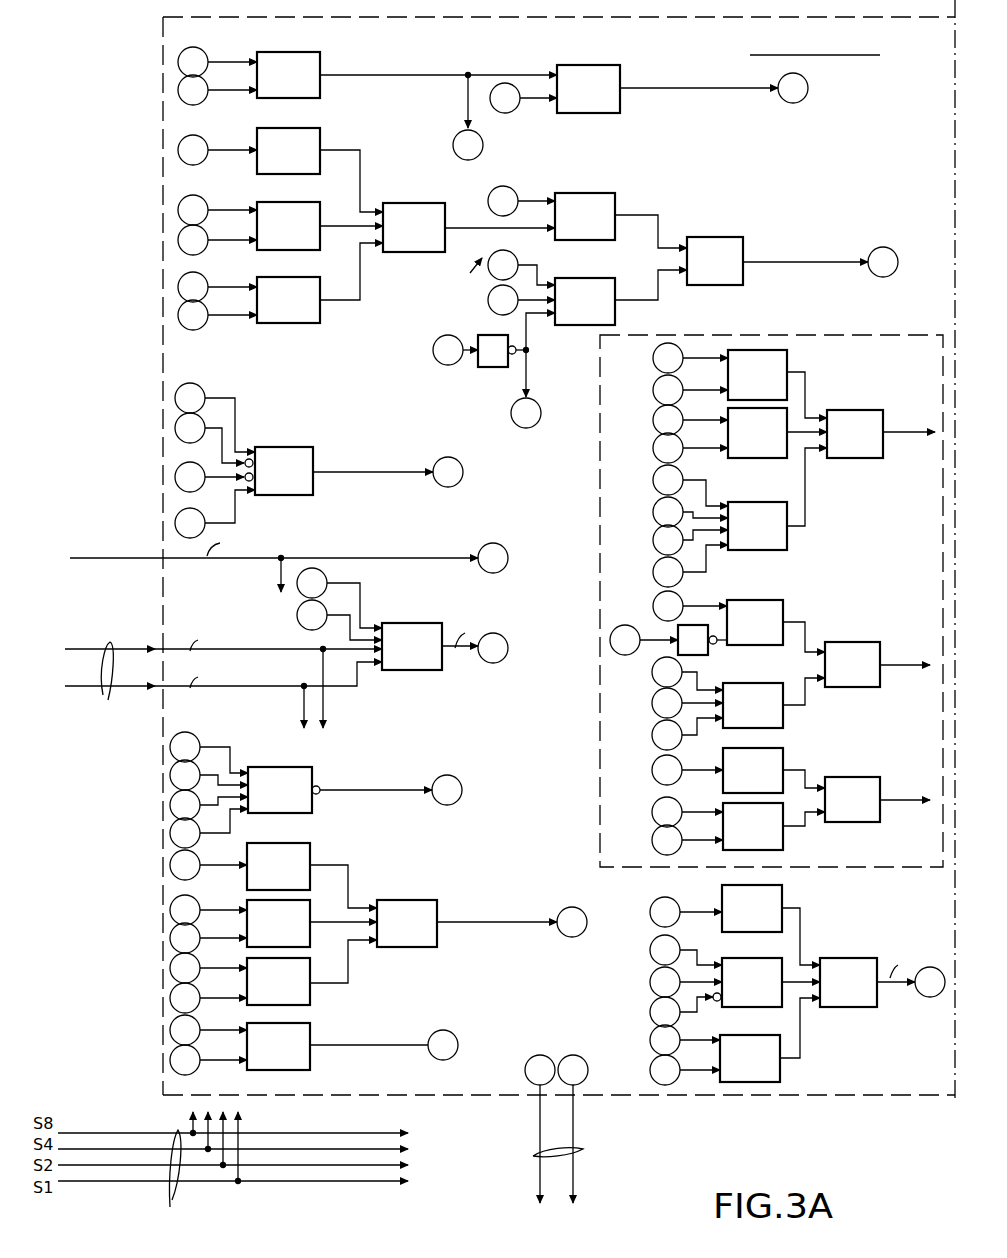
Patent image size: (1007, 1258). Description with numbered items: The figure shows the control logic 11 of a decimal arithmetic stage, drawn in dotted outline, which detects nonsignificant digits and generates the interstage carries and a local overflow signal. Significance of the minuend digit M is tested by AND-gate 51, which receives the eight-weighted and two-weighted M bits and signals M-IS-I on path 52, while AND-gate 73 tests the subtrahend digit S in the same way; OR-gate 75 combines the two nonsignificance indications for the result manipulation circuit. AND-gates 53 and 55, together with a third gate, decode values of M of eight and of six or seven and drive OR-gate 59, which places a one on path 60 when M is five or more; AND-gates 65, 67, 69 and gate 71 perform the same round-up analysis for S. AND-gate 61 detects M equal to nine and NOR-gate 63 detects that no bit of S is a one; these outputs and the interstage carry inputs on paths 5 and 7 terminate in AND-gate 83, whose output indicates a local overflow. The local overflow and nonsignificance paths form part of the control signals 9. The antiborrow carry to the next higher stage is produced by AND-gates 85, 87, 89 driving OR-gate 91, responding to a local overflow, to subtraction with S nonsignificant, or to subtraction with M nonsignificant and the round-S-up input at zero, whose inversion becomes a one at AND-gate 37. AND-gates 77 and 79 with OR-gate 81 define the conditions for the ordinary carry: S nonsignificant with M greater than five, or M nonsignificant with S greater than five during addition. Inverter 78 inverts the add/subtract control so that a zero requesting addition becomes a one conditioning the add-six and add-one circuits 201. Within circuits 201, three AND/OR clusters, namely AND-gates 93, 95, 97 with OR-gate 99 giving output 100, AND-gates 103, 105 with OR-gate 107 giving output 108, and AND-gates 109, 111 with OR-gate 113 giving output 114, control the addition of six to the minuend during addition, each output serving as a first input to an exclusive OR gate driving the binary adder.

The control logic 11 is at (538, 17).
The AND-gate 51 is at (280, 52).
The path 52 is at (372, 78).
The AND-gate 53 is at (280, 128).
The AND-gate 55 is at (280, 202).
The OR-gate 75 is at (280, 277).
The OR-gate 59 is at (400, 203).
The path 60 is at (478, 228).
The AND-gate 77 is at (580, 193).
The AND-gate 79 is at (580, 278).
The OR-gate 81 is at (708, 237).
The inverter 78 is at (494, 335).
The AND-gate 61 is at (273, 447).
The AND-gate 37 is at (95, 557).
The path 5 is at (94, 648).
The path 7 is at (94, 686).
The AND-gate 83 is at (398, 623).
The NOR-gate 63 is at (270, 767).
The AND-gate 65 is at (306, 857).
The AND-gate 67 is at (306, 914).
The AND-gate 69 is at (306, 977).
The OR gate 71 is at (482, 912).
The AND-gate 73 is at (302, 1072).
The ADD 6 and ADD 1 circuits 201 is at (828, 335).
The AND-gate 93 is at (787, 362).
The AND-gate 95 is at (765, 458).
The AND-gate 97 is at (758, 502).
The OR-gate 99 is at (838, 458).
The output 100 is at (897, 436).
The AND-gate 103 is at (732, 600).
The AND-gate 105 is at (730, 683).
The OR-gate 107 is at (838, 687).
The output 108 is at (895, 668).
The AND-gate 109 is at (776, 762).
The AND-gate 111 is at (770, 850).
The OR-gate 113 is at (838, 777).
The output 114 is at (895, 803).
The AND-gate 85 is at (765, 885).
The AND-gate 87 is at (752, 958).
The AND-gate 89 is at (768, 1082).
The OR-gate 91 is at (838, 958).
The control signals 9 is at (563, 1129).